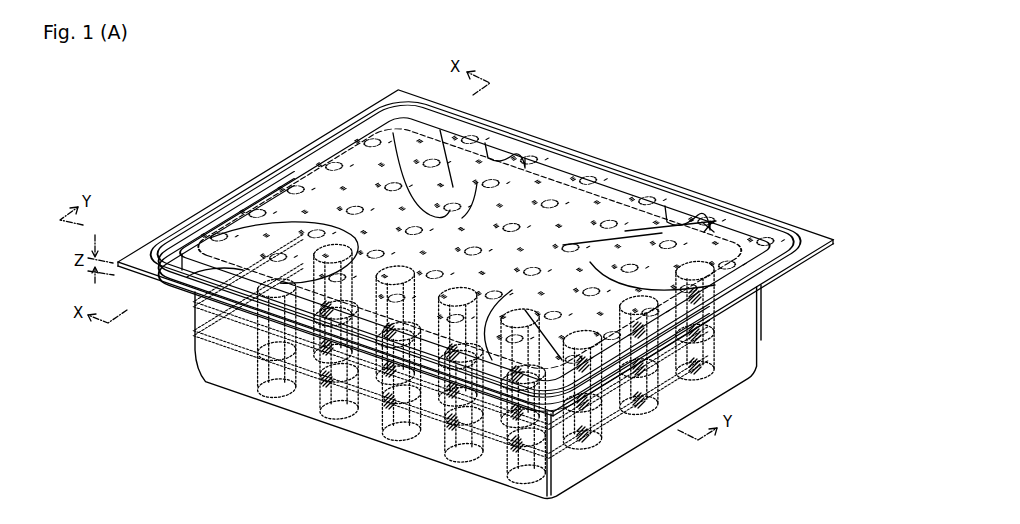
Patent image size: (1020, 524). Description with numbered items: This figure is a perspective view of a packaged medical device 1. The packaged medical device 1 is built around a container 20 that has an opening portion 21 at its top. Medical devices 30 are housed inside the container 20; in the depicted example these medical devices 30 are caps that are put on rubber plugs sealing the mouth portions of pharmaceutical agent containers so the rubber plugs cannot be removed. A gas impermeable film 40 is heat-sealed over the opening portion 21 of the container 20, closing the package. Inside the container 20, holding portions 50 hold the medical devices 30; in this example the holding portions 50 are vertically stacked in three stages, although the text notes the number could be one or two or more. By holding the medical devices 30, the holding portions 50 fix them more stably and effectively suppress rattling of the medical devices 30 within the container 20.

The packaged medical device 1 is at (652, 88).
The container 20 is at (207, 349).
The opening portion 21 is at (640, 202).
The medical devices 30 is at (282, 383).
The gas impermeable film 40 is at (399, 88).
The holding portions 50 is at (660, 283).